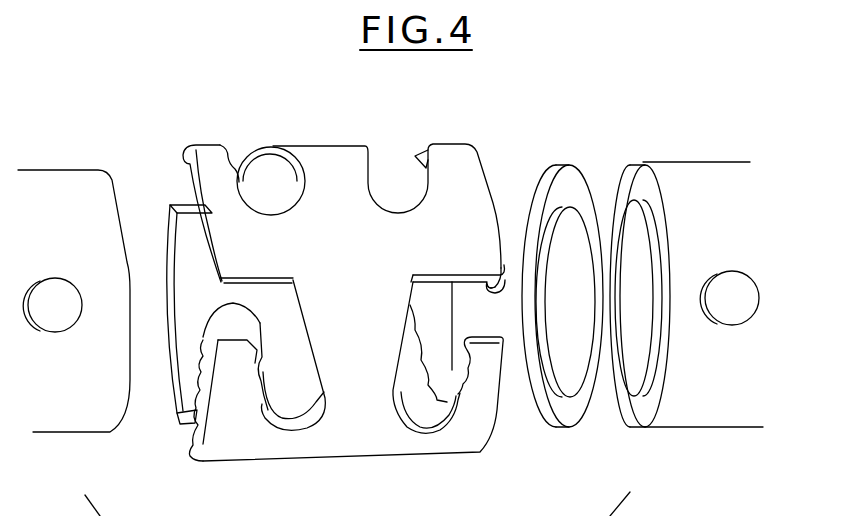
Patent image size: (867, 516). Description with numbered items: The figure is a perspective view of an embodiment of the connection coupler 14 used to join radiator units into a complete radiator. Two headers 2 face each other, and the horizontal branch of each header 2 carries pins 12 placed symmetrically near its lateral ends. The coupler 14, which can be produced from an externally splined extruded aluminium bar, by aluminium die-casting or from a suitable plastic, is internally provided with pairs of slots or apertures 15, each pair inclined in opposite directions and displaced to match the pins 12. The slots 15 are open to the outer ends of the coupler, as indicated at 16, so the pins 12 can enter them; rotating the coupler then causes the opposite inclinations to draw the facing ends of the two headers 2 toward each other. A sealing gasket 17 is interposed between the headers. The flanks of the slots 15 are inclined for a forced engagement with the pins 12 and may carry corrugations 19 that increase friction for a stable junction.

The header 2 is at (83, 183).
The pin 12 is at (60, 290).
The connection coupler 14 is at (311, 136).
The slot 15 is at (309, 370).
The open outer end of slot 16 is at (492, 300).
The sealing gasket 17 is at (581, 177).
The corrugation 19 is at (453, 393).